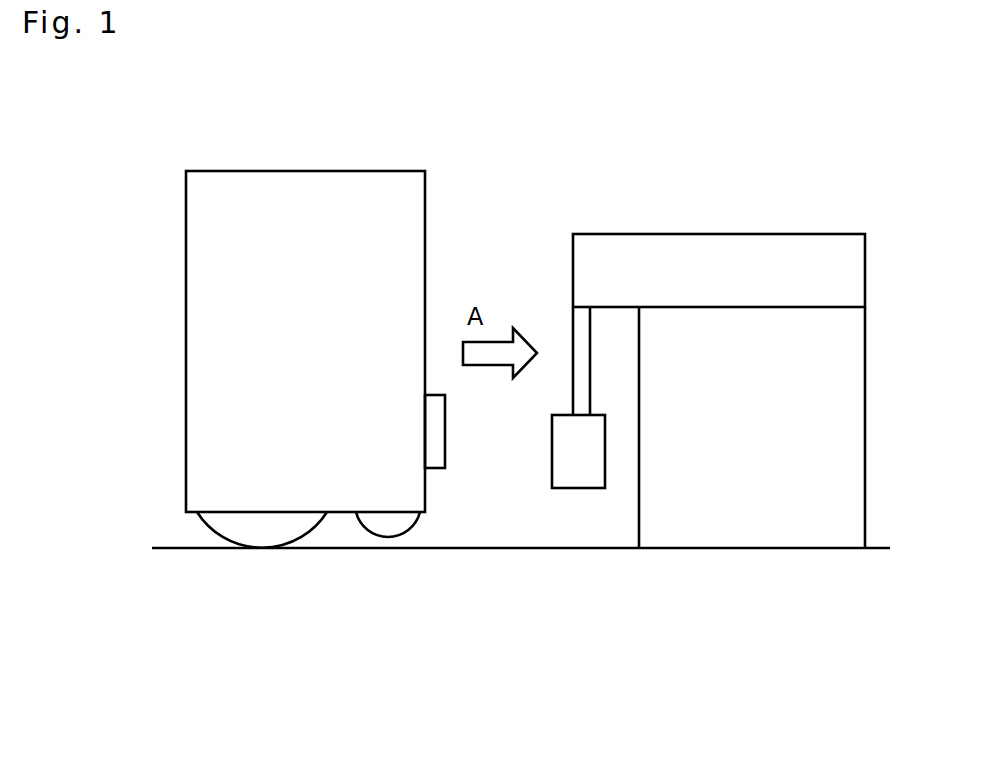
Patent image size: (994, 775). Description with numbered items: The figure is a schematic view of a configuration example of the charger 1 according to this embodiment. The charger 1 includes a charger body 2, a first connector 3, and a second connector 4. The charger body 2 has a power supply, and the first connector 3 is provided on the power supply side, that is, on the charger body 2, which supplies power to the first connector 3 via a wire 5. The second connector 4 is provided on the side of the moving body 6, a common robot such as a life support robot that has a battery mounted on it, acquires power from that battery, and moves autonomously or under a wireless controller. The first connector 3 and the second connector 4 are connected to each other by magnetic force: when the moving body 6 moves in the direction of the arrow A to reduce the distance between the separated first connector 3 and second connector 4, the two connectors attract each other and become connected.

The charger 1 is at (549, 174).
The charger body 2 is at (868, 363).
The first connector 3 is at (573, 484).
The second connector 4 is at (441, 428).
The wire 5 is at (590, 376).
The moving body 6 is at (198, 341).